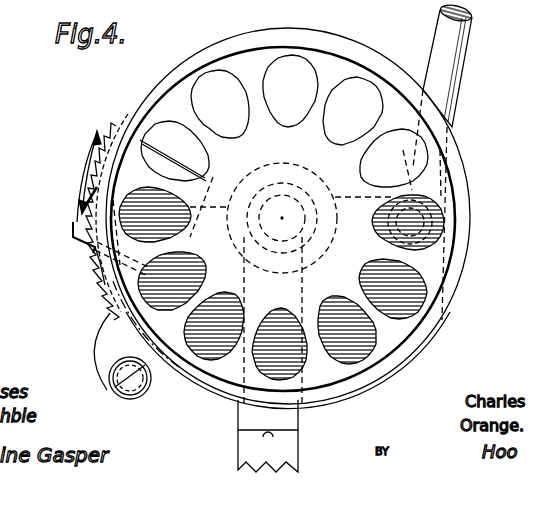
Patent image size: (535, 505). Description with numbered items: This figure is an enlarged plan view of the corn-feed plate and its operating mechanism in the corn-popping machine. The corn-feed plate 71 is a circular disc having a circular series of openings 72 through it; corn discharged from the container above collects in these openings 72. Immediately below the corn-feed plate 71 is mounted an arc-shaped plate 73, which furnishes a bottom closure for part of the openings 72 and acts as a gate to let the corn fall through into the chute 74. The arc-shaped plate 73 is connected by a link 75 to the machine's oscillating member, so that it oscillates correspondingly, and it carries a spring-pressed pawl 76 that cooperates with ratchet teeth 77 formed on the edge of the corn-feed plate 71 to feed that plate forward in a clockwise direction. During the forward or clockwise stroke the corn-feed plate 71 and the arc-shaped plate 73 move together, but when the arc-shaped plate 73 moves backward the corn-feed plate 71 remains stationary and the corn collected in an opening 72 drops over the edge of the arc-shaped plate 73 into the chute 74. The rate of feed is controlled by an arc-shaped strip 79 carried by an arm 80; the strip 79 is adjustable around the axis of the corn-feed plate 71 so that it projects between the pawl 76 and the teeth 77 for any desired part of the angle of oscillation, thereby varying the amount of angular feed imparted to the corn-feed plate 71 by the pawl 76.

The corn-feed plate 71 is at (167, 100).
The openings 72 is at (296, 72).
The arc-shaped plate 73 is at (413, 288).
The chute 74 is at (72, 230).
The link 75 is at (458, 78).
The spring-pressed pawl 76 is at (107, 347).
The ratchet teeth 77 is at (98, 264).
The arc-shaped strip 79 is at (207, 407).
The arm 80 is at (278, 463).